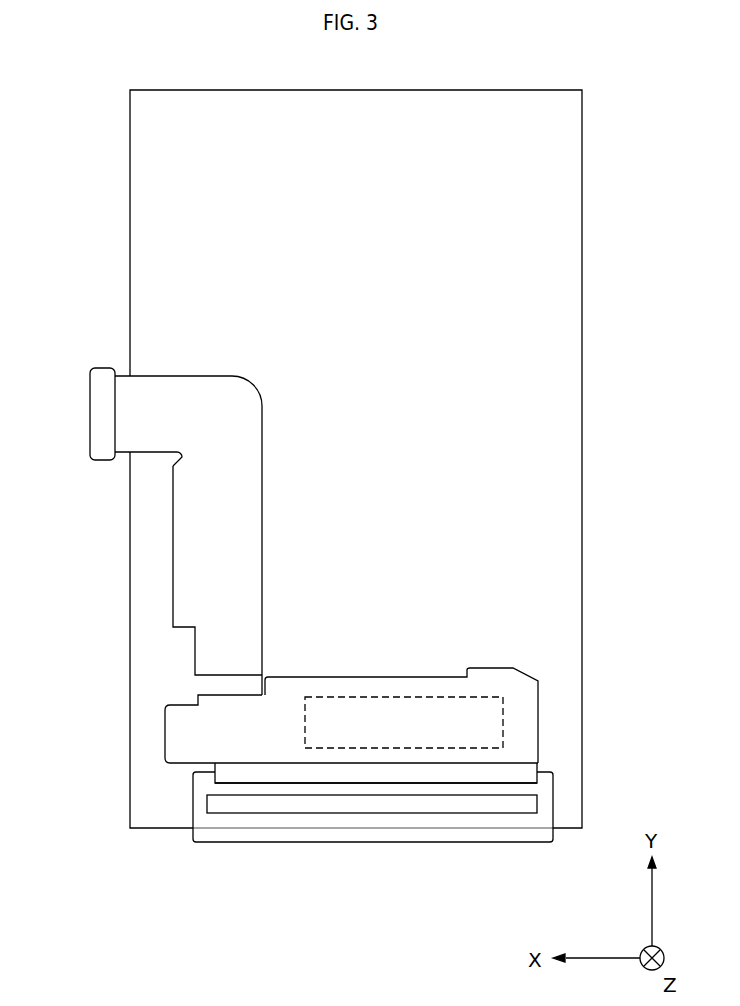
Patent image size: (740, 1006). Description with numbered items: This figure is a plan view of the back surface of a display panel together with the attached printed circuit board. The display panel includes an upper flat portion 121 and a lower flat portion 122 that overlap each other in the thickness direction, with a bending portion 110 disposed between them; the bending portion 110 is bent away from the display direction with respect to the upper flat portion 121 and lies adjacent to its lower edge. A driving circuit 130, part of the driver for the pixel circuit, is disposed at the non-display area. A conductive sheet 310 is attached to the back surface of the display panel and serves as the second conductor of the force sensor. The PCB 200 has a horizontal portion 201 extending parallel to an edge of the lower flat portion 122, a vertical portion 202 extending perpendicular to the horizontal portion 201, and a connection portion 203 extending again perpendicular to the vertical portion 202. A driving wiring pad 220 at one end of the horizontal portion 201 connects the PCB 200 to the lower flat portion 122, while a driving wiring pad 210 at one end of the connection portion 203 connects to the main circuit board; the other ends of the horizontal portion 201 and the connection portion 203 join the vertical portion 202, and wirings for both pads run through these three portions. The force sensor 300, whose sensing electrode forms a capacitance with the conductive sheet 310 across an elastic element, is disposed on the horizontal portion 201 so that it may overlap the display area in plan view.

The bending portion 110 is at (357, 838).
The upper flat portion 121 is at (150, 768).
The lower flat portion 122 is at (193, 830).
The driving circuit 130 is at (267, 808).
The PCB 200 is at (187, 375).
The horizontal portion 201 is at (498, 680).
The vertical portion 202 is at (240, 550).
The connection portion 203 is at (163, 414).
The driving wiring pad 210 is at (103, 442).
The driving wiring pad 220 is at (248, 777).
The force sensor 300 is at (500, 722).
The conductive sheet 310 is at (150, 768).